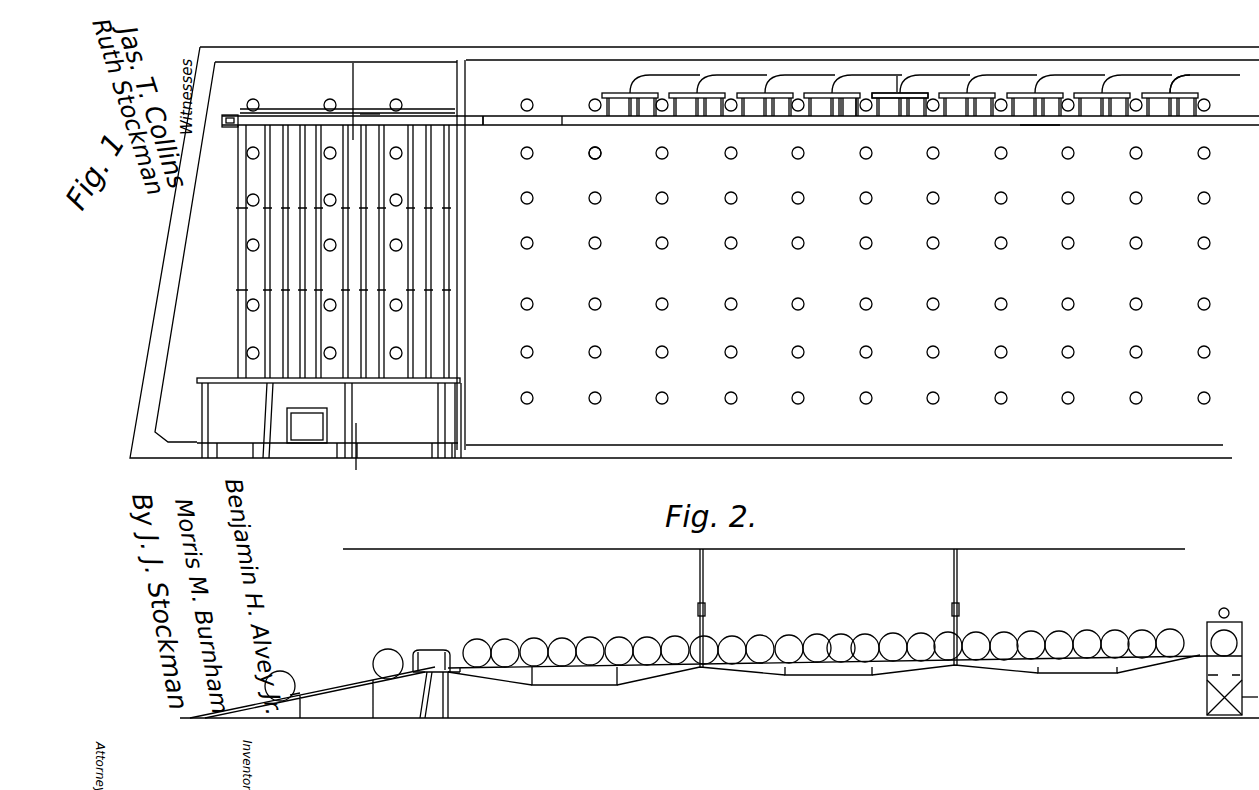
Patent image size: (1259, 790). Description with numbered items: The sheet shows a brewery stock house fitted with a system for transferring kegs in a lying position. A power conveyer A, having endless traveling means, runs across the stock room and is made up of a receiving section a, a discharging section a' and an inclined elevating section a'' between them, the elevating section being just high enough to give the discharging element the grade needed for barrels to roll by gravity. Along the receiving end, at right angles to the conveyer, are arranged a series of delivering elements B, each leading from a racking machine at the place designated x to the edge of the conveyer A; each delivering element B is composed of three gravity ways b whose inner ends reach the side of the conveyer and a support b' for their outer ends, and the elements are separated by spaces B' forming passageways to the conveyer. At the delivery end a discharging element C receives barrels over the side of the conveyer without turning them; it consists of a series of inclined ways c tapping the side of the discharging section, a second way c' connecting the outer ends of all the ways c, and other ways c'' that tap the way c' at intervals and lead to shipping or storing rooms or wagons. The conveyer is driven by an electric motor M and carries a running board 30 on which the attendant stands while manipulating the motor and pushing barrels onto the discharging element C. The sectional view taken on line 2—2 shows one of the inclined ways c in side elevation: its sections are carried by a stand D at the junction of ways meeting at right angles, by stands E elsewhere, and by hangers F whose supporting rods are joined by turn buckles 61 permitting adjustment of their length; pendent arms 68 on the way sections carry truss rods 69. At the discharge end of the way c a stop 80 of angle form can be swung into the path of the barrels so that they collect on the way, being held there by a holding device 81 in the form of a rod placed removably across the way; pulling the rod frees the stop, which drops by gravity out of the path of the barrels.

In FIG. 1, the electric motor M is at (229, 116).
In FIG. 2, the electric motor M is at (1228, 609).
In FIG. 1, the discharging section a' is at (347, 100).
In FIG. 1, the section line 2 is at (350, 276).
In FIG. 1, the running board 30 is at (369, 108).
In FIG. 2, the running board 30 is at (1255, 698).
In FIG. 1, the inclined ways c is at (323, 229).
In FIG. 2, the inclined ways c is at (823, 641).
In FIG. 1, the discharging element C is at (327, 251).
In FIG. 2, the discharging element C is at (827, 636).
In FIG. 1, the hangers F is at (232, 204).
In FIG. 2, the hangers F is at (828, 608).
In FIG. 1, the second way c' is at (328, 391).
In FIG. 2, the second way c' is at (430, 695).
In FIG. 1, the other ways c'' is at (329, 420).
In FIG. 2, the other ways c'' is at (314, 681).
In FIG. 1, the elevating section a'' is at (495, 131).
In FIG. 1, the power conveyer A is at (607, 142).
In FIG. 2, the power conveyer A is at (1250, 681).
In FIG. 1, the support b' is at (901, 79).
In FIG. 1, the delivering elements B is at (921, 69).
In FIG. 1, the racking machine place x is at (901, 75).
In FIG. 1, the gravity ways b is at (955, 125).
In FIG. 1, the spaces B' is at (922, 124).
In FIG. 1, the receiving section a is at (1040, 134).
In FIG. 2, the stops 80 is at (458, 666).
In FIG. 2, the holding device 81 is at (467, 673).
In FIG. 2, the stands E is at (310, 703).
In FIG. 2, the stand D is at (453, 695).
In FIG. 2, the truss rods 69 is at (521, 684).
In FIG. 2, the pendent arms 68 is at (617, 669).
In FIG. 2, the turn buckles 61 is at (708, 613).